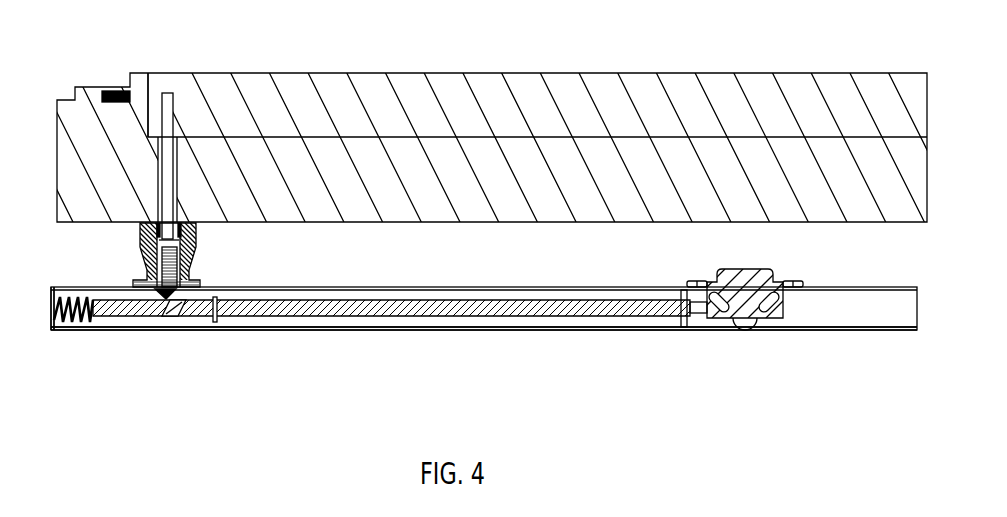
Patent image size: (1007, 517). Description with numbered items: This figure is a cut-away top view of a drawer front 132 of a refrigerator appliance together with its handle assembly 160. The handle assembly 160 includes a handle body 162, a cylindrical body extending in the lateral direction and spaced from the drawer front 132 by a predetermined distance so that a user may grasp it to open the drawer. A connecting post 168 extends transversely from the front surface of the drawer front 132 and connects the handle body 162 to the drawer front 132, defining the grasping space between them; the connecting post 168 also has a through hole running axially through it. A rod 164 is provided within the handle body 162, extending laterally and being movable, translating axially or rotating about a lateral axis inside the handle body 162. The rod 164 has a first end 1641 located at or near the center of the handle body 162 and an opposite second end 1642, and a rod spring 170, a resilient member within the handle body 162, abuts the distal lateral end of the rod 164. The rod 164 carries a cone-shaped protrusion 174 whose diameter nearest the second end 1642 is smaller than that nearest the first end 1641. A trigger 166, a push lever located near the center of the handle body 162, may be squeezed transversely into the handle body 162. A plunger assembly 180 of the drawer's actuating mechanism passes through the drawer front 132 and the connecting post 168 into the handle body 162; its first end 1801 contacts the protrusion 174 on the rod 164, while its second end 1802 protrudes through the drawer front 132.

The drawer front 132 is at (514, 187).
The plunger assembly 180 is at (168, 118).
The second end of plunger assembly 1802 is at (155, 86).
The connecting post 168 is at (190, 250).
The handle assembly 160 is at (313, 345).
The handle body 162 is at (563, 318).
The rod 164 is at (452, 302).
The protrusion 174 is at (177, 312).
The first end of plunger assembly 1801 is at (151, 307).
The rod spring 170 is at (62, 295).
The second end of rod 1642 is at (86, 333).
The trigger 166 is at (745, 285).
The first end of rod 1641 is at (706, 335).